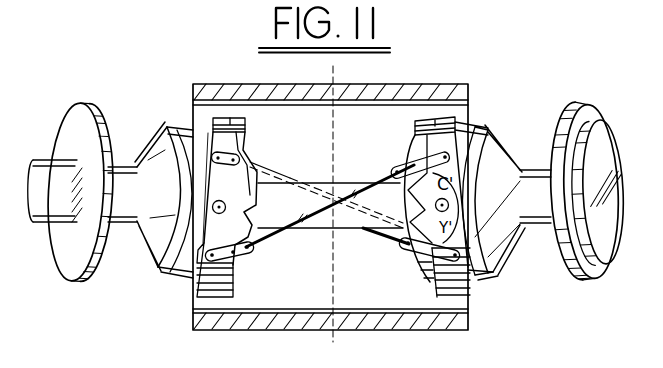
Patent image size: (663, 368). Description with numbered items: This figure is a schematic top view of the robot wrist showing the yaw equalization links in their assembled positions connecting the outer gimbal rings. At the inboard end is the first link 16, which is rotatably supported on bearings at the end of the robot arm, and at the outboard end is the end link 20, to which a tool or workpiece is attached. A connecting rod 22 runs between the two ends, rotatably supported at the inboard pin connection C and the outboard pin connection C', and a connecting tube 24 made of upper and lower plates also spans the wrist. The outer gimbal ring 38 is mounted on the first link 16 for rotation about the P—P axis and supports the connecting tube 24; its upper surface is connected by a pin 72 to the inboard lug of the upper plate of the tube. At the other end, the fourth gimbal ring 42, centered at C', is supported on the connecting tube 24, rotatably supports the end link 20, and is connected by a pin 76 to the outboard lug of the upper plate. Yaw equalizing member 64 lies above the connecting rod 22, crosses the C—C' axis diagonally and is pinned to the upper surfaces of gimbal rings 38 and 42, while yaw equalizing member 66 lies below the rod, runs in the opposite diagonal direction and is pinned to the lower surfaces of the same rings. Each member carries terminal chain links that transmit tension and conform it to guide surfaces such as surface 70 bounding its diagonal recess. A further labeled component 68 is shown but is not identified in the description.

The first link 16 is at (137, 127).
The end link 20 is at (519, 135).
The connecting rod 22 is at (306, 179).
The connecting tube 24 is at (418, 90).
The second or outer gimbal ring 38 is at (247, 127).
The fourth gimbal ring 42 is at (433, 292).
The yaw equalizing member 64 is at (281, 239).
The yaw equalizing member 66 is at (383, 243).
The lower left crank arm 68 is at (268, 224).
The guide surface 70 is at (397, 169).
The pin 72 is at (203, 243).
The pin 76 is at (498, 266).